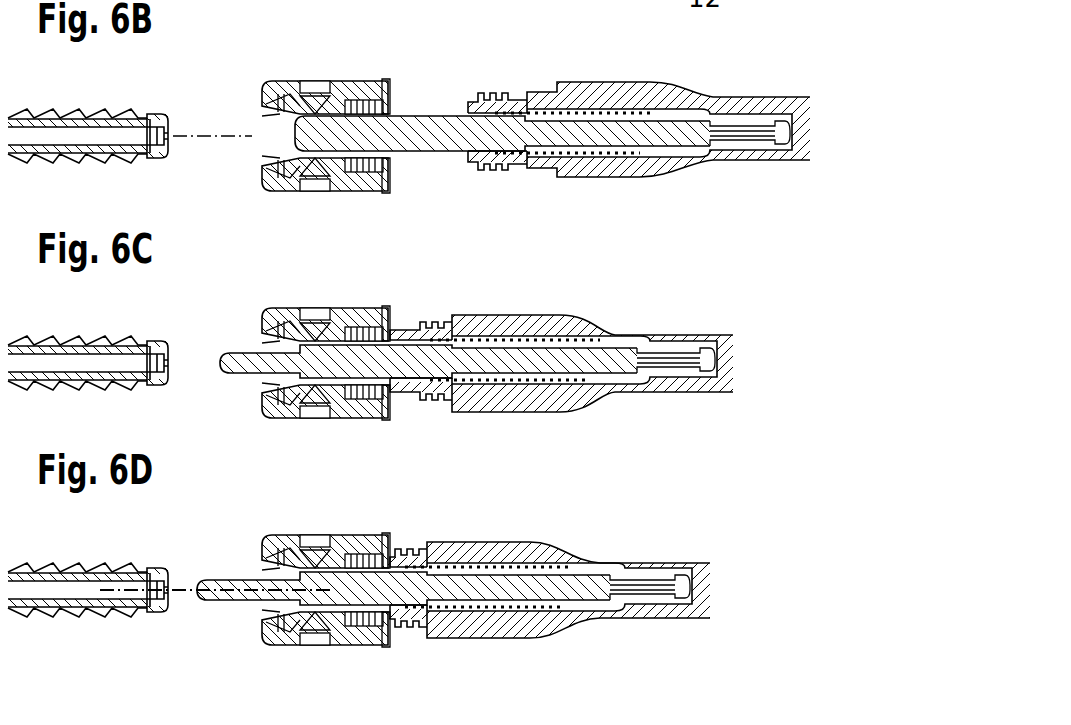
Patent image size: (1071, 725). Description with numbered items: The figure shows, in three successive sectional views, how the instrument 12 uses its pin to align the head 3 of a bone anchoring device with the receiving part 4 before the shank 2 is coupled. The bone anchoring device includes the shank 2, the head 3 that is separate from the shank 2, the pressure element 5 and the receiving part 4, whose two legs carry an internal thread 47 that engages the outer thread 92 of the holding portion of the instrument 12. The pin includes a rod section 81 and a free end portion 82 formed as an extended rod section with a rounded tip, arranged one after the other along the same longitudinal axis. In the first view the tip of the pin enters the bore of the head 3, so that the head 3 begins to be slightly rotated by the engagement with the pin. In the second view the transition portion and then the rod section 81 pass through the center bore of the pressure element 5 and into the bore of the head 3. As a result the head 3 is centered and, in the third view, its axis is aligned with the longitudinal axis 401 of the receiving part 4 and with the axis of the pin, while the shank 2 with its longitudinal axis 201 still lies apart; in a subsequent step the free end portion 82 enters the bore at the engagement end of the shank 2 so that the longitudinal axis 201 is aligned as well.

In FIG. 6B, the shank 2 is at (88, 105).
In FIG. 6C, the shank 2 is at (88, 332).
In FIG. 6D, the shank 2 is at (88, 559).
In FIG. 6B, the head 3 is at (300, 155).
In FIG. 6C, the head 3 is at (300, 382).
In FIG. 6D, the head 3 is at (286, 622).
In FIG. 6D, the receiving part 4 is at (325, 630).
In FIG. 6D, the pressure element 5 is at (322, 556).
In FIG. 6B, the instrument 12 is at (639, 169).
In FIG. 6C, the instrument 12 is at (561, 403).
In FIG. 6D, the instrument 12 is at (557, 631).
In FIG. 6D, the internal thread 47 is at (406, 566).
In FIG. 6B, the rod section 81 is at (542, 165).
In FIG. 6C, the free end portion 82 is at (455, 336).
In FIG. 6D, the free end portion 82 is at (434, 563).
In FIG. 6D, the outer thread 92 is at (420, 624).
In FIG. 6D, the longitudinal axis of the shank 201 is at (192, 653).
In FIG. 6B, the longitudinal axis of the receiving part 401 is at (215, 97).